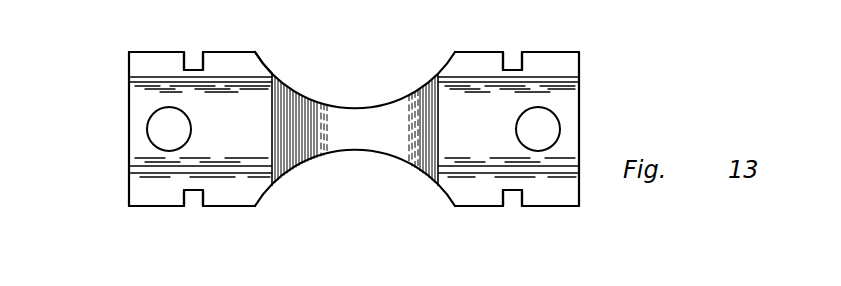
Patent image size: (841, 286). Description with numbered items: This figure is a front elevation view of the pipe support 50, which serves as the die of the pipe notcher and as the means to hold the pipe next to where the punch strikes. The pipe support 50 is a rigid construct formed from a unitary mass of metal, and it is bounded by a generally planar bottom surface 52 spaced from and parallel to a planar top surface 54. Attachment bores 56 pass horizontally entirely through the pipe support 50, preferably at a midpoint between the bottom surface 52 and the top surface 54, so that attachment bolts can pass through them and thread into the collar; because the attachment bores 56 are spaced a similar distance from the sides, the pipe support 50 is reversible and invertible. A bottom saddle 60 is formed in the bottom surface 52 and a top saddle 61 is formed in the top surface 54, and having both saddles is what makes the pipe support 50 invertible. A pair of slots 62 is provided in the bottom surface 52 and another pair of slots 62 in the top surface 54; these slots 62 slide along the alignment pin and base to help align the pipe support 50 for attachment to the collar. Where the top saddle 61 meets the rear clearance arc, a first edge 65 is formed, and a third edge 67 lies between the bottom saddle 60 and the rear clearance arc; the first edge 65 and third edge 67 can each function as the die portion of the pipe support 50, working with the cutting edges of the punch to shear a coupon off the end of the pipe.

The pipe support 50 is at (96, 76).
The bottom surface 52 is at (148, 208).
The top surface 54 is at (152, 52).
The attachment bores 56 is at (160, 132).
The bottom saddle 60 is at (266, 193).
The top saddle 61 is at (265, 62).
The slots 62 is at (198, 67).
The first edge 65 is at (345, 106).
The third edge 67 is at (326, 155).